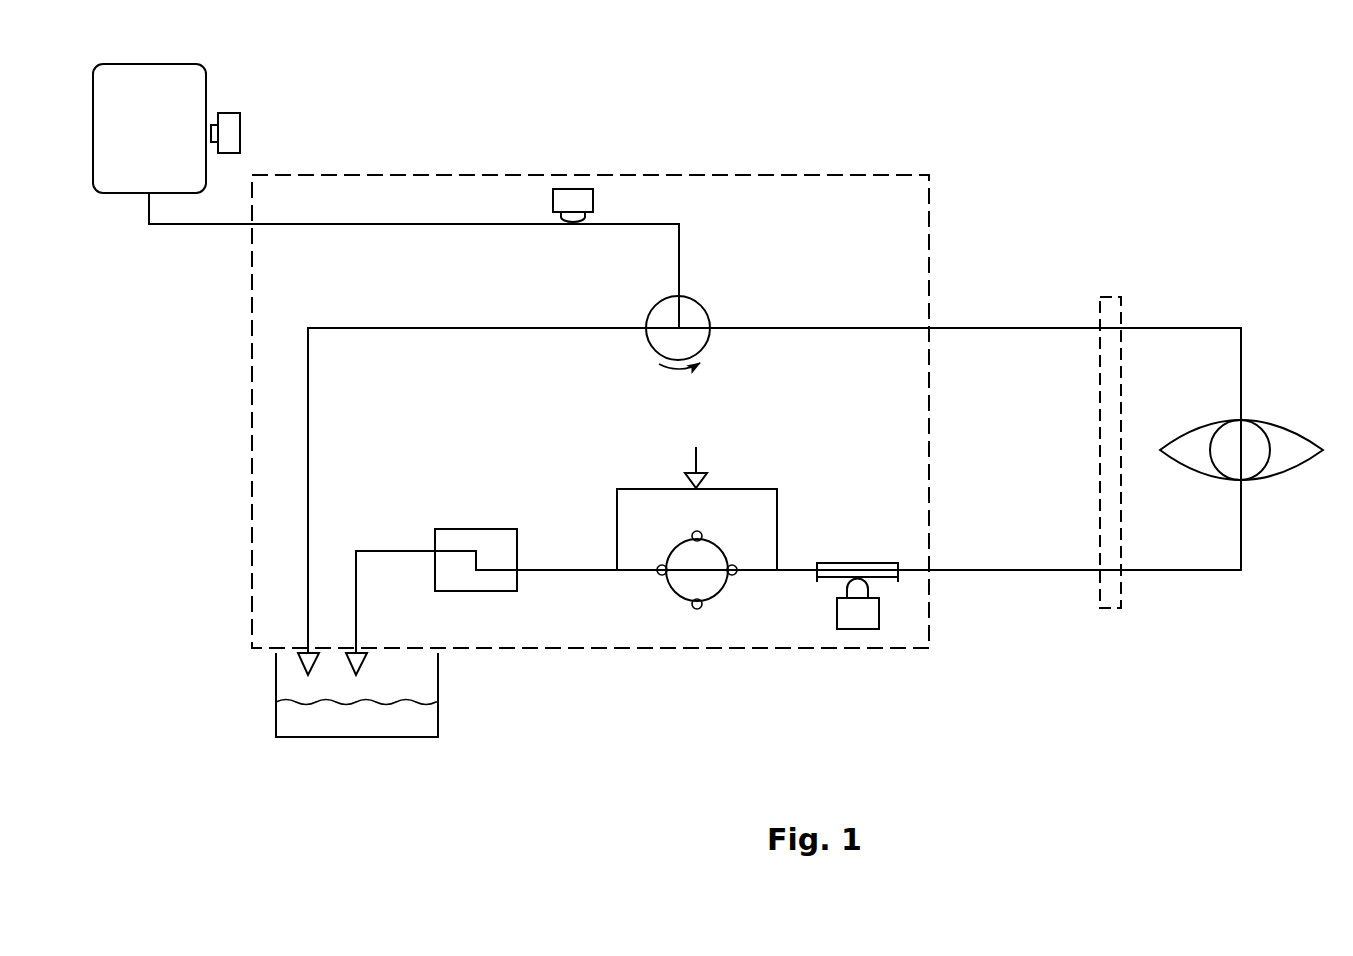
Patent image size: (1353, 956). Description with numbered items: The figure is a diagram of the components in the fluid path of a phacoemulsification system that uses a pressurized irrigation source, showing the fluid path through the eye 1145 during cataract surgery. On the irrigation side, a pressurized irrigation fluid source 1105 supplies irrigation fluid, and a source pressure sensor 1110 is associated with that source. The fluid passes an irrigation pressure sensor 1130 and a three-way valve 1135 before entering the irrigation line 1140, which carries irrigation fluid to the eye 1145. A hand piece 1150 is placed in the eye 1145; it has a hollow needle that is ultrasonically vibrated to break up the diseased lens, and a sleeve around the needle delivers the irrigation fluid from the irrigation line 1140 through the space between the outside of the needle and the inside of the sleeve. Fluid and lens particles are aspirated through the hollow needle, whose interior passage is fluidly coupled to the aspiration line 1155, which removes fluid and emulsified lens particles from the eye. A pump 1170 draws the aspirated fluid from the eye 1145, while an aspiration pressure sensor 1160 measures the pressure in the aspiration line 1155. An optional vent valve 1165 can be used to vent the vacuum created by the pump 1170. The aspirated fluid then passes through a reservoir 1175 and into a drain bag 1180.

The pressurized irrigation fluid source 1105 is at (386, 196).
The source pressure sensor 1110 is at (245, 118).
The irrigation pressure sensor 1130 is at (575, 187).
The three-way valve 1135 is at (705, 305).
The irrigation line 1140 is at (1017, 325).
The eye 1145 is at (1278, 477).
The hand piece 1150 is at (1123, 296).
The aspiration line 1155 is at (1042, 575).
The aspiration pressure sensor 1160 is at (856, 631).
The vent valve 1165 is at (698, 455).
The pump 1170 is at (690, 567).
The reservoir 1175 is at (493, 527).
The drain bag 1180 is at (440, 717).